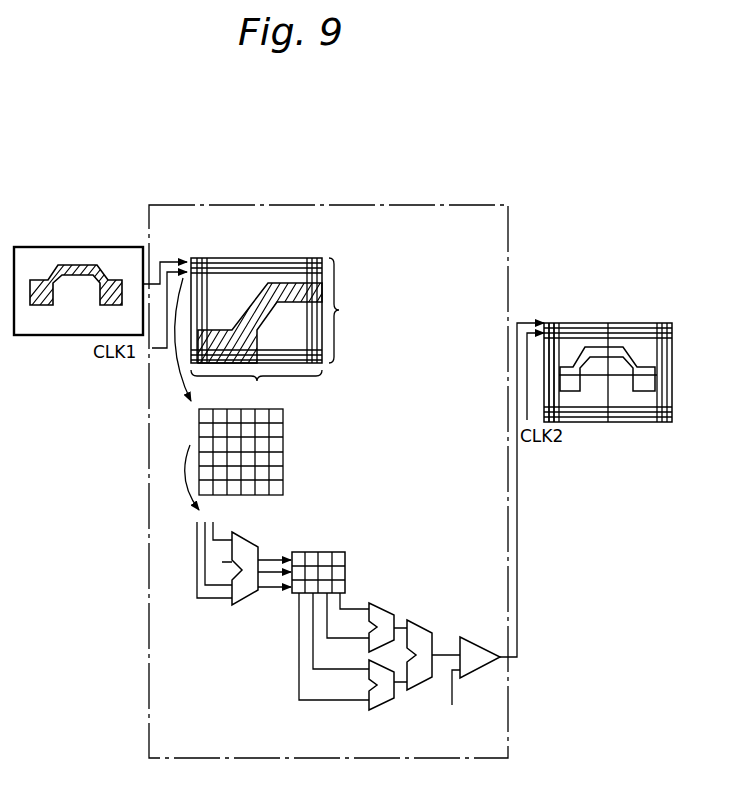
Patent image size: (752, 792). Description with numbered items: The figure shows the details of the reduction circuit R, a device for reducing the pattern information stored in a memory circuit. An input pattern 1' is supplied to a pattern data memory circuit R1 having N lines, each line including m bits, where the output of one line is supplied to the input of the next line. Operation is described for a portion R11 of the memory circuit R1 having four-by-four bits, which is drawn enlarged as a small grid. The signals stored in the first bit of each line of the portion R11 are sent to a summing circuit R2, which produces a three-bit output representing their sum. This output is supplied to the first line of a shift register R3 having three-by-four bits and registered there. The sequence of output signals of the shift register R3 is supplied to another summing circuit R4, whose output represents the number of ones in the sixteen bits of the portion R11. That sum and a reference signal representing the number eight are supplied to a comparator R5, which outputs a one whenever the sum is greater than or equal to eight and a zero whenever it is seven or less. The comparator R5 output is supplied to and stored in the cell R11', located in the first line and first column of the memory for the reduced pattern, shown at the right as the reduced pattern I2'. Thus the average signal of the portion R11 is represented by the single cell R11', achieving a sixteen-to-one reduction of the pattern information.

The device for reducing pattern information R is at (428, 205).
The input picture (original binary pattern) 1' is at (85, 305).
The pattern data memory circuit R1 is at (304, 258).
The portion of the pattern data memory circuit R11 is at (229, 367).
The summing circuit R2 is at (247, 545).
The shift register R3 is at (338, 552).
The summing circuit R4 is at (427, 616).
The comparator R5 is at (477, 640).
The cell R11' is at (561, 356).
The reduced output picture I2' is at (608, 356).